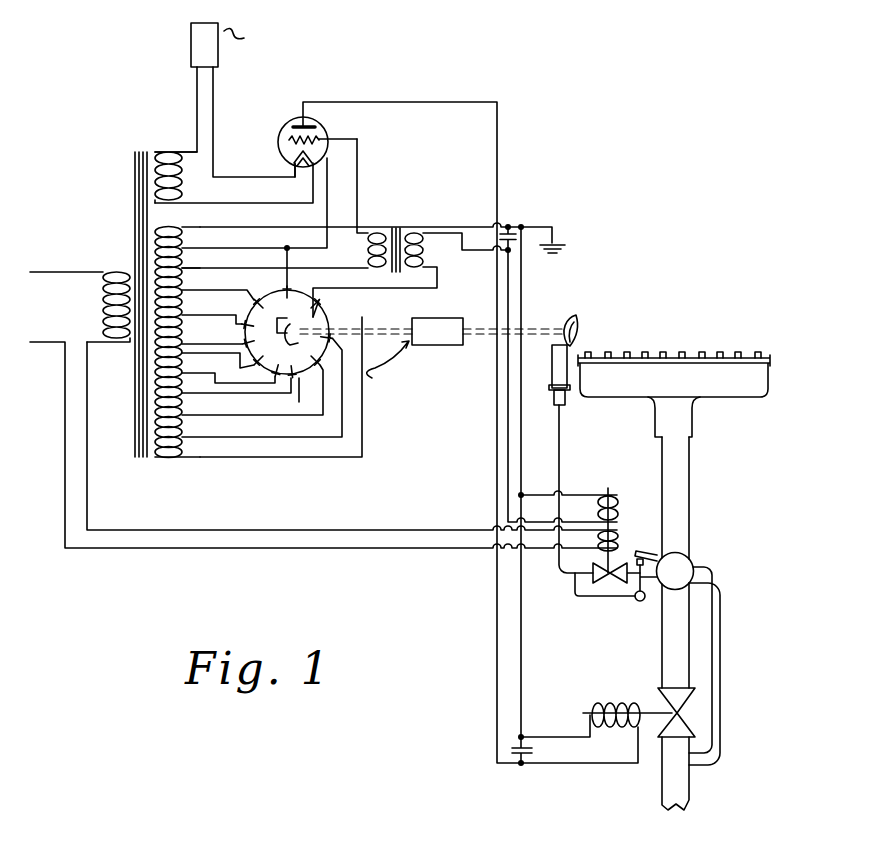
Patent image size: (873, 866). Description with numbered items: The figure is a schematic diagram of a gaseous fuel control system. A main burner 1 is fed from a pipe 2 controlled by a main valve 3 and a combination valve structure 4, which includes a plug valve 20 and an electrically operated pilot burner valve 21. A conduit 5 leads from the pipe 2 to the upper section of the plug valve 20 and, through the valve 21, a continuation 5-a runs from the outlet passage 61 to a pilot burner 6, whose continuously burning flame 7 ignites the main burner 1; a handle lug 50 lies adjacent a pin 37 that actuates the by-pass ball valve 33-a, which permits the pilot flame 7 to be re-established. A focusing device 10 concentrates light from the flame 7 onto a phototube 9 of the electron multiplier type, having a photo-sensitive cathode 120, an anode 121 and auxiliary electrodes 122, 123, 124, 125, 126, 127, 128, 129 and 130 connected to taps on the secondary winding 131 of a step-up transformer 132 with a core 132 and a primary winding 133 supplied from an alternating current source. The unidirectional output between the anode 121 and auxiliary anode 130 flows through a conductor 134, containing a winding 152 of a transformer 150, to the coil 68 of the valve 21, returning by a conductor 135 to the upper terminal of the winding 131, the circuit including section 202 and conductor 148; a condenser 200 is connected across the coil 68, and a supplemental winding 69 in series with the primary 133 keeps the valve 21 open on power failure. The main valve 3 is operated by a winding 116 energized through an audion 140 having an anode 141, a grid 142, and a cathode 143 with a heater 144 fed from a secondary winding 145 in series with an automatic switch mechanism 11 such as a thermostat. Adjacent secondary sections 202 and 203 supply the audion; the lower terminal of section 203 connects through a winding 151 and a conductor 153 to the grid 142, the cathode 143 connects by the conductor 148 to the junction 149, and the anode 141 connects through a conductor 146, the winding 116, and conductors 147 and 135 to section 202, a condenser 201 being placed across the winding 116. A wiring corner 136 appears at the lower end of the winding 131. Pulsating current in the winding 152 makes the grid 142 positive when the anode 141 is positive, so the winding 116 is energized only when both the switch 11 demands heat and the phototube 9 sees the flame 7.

The main burner 1 is at (742, 395).
The pipe 2 is at (690, 522).
The main valve 3 is at (653, 694).
The combination valve structure 4 is at (656, 594).
The conduit 5 is at (722, 618).
The continuation of the pilot burner conduit 5-a is at (561, 455).
The pilot burner 6 is at (552, 374).
The pilot flame 7 is at (581, 324).
The phototube 9 is at (346, 313).
The focusing device 10 is at (455, 318).
The condition responsive switch mechanism 11 is at (190, 36).
The plug valve 20 is at (703, 564).
The pilot burner valve 21 is at (619, 565).
The valve 33-a is at (640, 602).
The pin 37 is at (637, 570).
The handle lug 50 is at (655, 556).
The passage 61 is at (575, 598).
The coil 68 is at (648, 490).
The supplemental winding 69 is at (618, 537).
The winding 116 is at (595, 728).
The photo-sensitive cathode 120 is at (288, 337).
The anode 121 is at (310, 300).
The auxiliary electrode 122 is at (333, 339).
The auxiliary electrode 123 is at (320, 364).
The auxiliary electrode 124 is at (300, 390).
The auxiliary electrode 125 is at (285, 386).
The auxiliary electrode 126 is at (256, 368).
The auxiliary electrode 127 is at (242, 344).
The auxiliary electrode 128 is at (238, 324).
The auxiliary electrode 129 is at (256, 302).
The auxiliary anode 130 is at (285, 292).
The secondary winding 131 is at (160, 460).
The step-up transformer 132 is at (127, 189).
The primary winding 133 is at (103, 300).
The conductor 134 is at (388, 289).
The conductor 135 is at (443, 225).
The conductor 136 is at (312, 460).
The audion 140 is at (278, 117).
The anode 141 is at (310, 126).
The grid electrode 142 is at (322, 138).
The cathode 143 is at (290, 151).
The heater 144 is at (294, 164).
The secondary winding 145 is at (183, 194).
The conductor 146 is at (498, 150).
The conductor 147 is at (523, 686).
The conductor 148 is at (255, 248).
The junction 149 is at (183, 243).
The transformer 150 is at (389, 222).
The winding 151 is at (369, 250).
The winding 152 is at (425, 265).
The conductor 153 is at (358, 182).
The condenser 200 is at (512, 241).
The condenser 201 is at (514, 757).
The section 202 is at (168, 232).
The section 203 is at (183, 264).